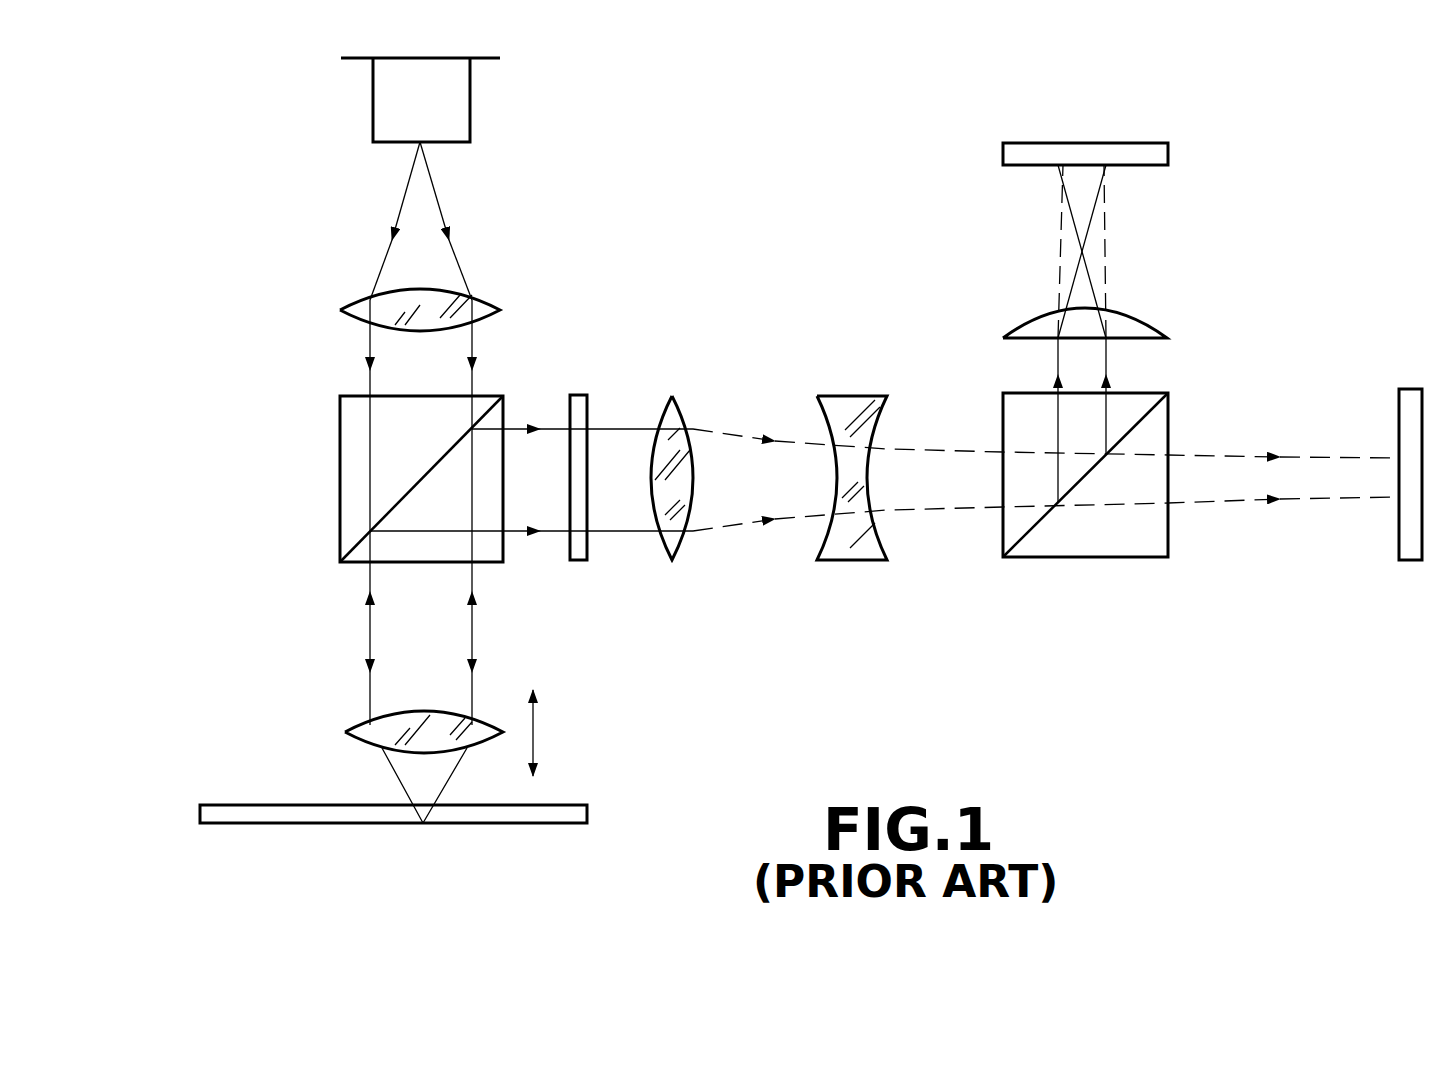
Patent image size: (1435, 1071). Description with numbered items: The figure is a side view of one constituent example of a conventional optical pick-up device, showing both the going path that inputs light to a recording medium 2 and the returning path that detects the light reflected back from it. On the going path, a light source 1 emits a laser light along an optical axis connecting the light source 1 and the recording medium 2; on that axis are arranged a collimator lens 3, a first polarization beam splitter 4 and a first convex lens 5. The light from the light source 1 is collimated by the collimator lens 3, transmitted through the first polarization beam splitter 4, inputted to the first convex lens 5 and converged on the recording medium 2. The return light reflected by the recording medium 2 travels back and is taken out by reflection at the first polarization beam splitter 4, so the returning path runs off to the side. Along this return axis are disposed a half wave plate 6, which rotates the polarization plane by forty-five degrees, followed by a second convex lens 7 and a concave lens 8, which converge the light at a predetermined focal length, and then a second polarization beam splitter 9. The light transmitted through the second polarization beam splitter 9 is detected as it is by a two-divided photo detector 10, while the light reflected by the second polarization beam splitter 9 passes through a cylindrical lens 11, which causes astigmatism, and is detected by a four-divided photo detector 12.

The light source 1 is at (377, 102).
The recording medium 2 is at (342, 818).
The collimator lens 3 is at (400, 305).
The first polarization beam splitter 4 is at (349, 498).
The first convex lens 5 is at (400, 722).
The half wave plate 6 is at (578, 406).
The second convex lens 7 is at (676, 422).
The concave lens 8 is at (854, 410).
The second polarization beam splitter 9 is at (1114, 548).
The two-divided photo detector 10 is at (1408, 555).
The cylindrical lens 11 is at (1128, 326).
The four-divided photo detector 12 is at (1125, 150).